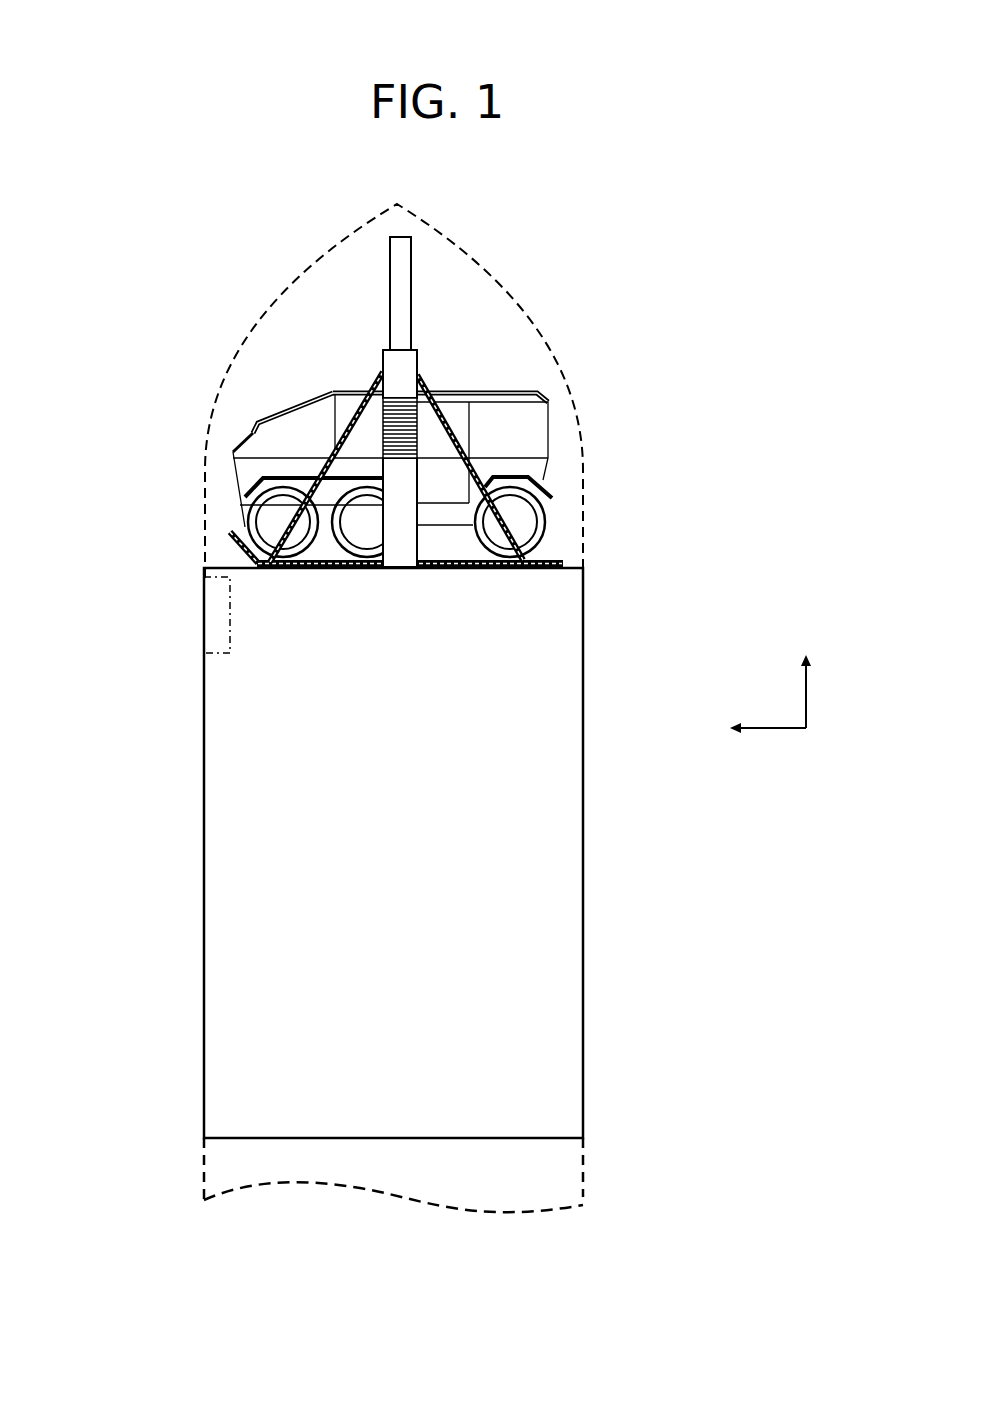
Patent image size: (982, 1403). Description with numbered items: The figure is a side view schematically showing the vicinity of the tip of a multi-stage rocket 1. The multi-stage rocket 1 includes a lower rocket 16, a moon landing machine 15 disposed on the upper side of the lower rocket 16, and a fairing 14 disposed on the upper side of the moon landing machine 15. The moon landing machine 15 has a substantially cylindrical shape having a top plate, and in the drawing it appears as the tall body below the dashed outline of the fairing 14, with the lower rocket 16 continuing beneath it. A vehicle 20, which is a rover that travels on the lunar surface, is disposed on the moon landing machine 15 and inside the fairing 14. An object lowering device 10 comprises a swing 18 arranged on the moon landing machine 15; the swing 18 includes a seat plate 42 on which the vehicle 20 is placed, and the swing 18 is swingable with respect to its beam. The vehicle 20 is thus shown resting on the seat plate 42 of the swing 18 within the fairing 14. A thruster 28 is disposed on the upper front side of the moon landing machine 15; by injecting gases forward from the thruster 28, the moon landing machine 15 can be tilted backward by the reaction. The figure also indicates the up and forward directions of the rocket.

The multi-stage rocket 1 is at (98, 500).
The object lowering device 10 is at (527, 341).
The fairing 14 is at (203, 465).
The moon landing machine 15 is at (203, 808).
The lower rocket 16 is at (204, 1170).
The swing 18 is at (365, 380).
The vehicle 20 is at (487, 392).
The thruster 28 is at (204, 613).
The seat plate 42 is at (553, 560).